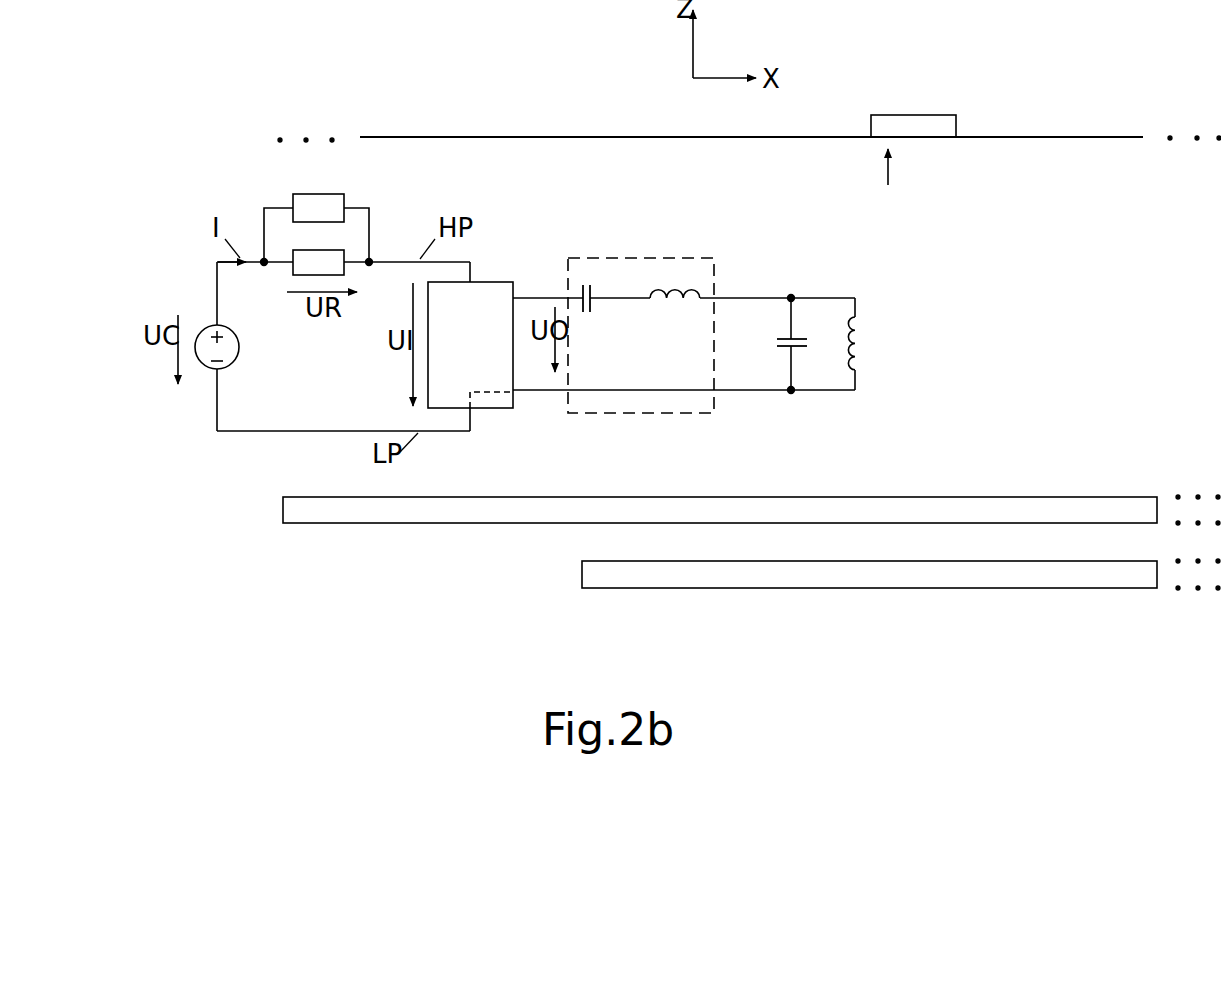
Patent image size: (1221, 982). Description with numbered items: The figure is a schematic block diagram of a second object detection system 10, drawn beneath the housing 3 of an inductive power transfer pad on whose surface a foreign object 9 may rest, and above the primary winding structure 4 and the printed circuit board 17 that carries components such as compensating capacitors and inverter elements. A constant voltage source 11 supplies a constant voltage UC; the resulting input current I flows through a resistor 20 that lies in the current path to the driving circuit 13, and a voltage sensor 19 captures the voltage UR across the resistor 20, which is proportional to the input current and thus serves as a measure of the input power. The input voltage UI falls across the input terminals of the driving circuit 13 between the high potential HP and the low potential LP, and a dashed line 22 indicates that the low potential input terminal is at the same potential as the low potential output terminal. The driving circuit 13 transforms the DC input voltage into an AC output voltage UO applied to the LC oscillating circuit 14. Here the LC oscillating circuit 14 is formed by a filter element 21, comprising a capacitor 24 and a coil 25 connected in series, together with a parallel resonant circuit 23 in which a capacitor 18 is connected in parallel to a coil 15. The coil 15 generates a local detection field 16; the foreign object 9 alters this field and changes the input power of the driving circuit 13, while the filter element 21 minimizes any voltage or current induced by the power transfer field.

The housing 3 is at (1078, 135).
The primary winding structure 4 is at (1030, 502).
The foreign object 9 is at (905, 125).
The object detection system 10 is at (276, 467).
The voltage source 11 is at (235, 333).
The driving circuit 13 is at (492, 278).
The LC oscillating circuit 14 is at (533, 295).
The coil 15 is at (863, 335).
The detection field 16 is at (890, 175).
The printed circuit board 17 is at (1047, 580).
The capacitor 18 is at (780, 348).
The voltage sensor 19 is at (317, 203).
The resistor 20 is at (332, 257).
The filter element 21 is at (675, 257).
The dashed line 22 is at (490, 395).
The parallel resonant circuit 23 is at (825, 293).
The capacitor 24 is at (593, 285).
The coil 25 is at (672, 296).